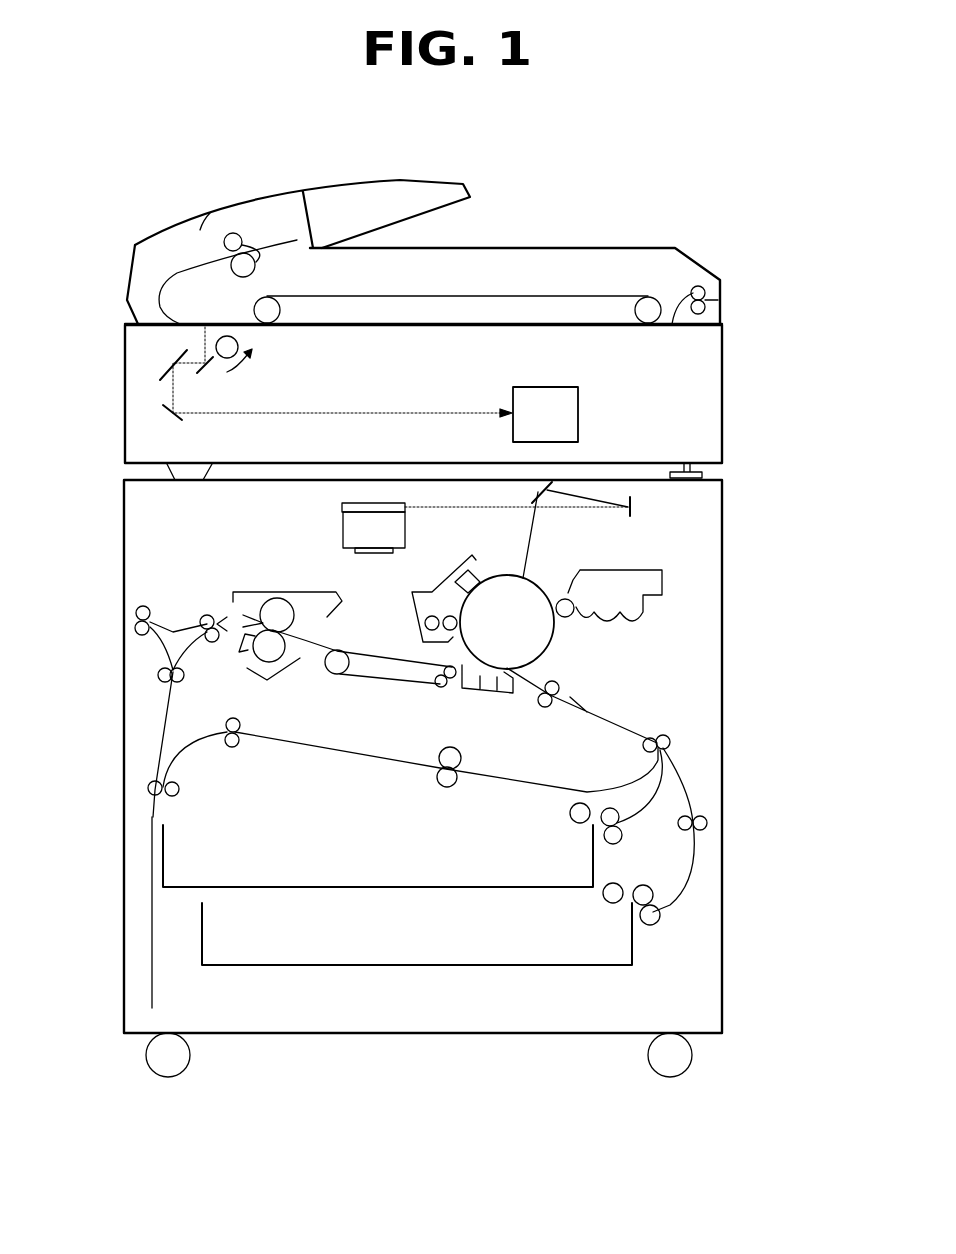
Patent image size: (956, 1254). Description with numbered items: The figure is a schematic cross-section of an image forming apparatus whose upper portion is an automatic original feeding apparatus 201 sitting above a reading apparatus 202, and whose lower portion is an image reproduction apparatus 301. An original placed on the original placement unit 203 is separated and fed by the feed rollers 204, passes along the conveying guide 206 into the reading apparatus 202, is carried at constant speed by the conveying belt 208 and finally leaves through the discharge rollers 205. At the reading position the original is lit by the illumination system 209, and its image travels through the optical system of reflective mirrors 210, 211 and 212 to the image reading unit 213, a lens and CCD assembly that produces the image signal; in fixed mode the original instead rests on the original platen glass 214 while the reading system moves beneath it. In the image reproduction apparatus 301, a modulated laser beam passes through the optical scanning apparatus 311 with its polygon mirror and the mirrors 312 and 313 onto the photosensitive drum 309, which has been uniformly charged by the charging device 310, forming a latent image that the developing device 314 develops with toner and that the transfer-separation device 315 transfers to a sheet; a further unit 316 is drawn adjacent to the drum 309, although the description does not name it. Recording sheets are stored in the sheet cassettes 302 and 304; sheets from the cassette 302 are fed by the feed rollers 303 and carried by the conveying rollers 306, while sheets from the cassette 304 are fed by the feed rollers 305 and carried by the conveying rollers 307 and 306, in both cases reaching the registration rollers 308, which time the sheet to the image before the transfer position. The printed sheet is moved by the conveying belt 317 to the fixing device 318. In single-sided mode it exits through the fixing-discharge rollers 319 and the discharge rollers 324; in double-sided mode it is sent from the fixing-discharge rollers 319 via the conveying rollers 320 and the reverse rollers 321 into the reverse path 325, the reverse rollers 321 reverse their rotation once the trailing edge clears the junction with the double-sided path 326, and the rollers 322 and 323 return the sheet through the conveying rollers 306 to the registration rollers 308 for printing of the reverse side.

The automatic original feeding apparatus 201 is at (677, 248).
The reading apparatus 202 is at (723, 392).
The original placement unit 203 is at (338, 183).
The feed rollers 204 is at (267, 228).
The discharge rollers 205 is at (722, 303).
The conveying guide 206 is at (177, 277).
The conveying belt 208 is at (427, 296).
The illumination system 209 is at (240, 343).
The reflective mirror 210 is at (203, 373).
The reflective mirror 211 is at (173, 363).
The reflective mirror 212 is at (173, 420).
The image reading unit 213 is at (578, 397).
The original platen glass 214 is at (518, 326).
The image reproduction apparatus 301 is at (723, 500).
The sheet cassette 302 is at (437, 887).
The feed rollers 303 is at (570, 813).
The sheet cassette 304 is at (437, 964).
The feed rollers 305 is at (632, 903).
The conveying rollers 306 is at (643, 742).
The conveying rollers 307 is at (707, 823).
The registration rollers 308 is at (559, 684).
The photosensitive drum 309 is at (563, 568).
The charging device 310 is at (477, 573).
The optical scanning apparatus 311 is at (342, 533).
The mirror 312 is at (631, 503).
The mirror 313 is at (528, 490).
The developing device 314 is at (648, 552).
The transfer-separation device 315 is at (470, 692).
The cleaner 316 is at (412, 603).
The conveying belt 317 is at (368, 677).
The fixing device 318 is at (263, 591).
The fixing-discharge rollers 319 is at (207, 615).
The conveying rollers 320 is at (184, 675).
The reverse rollers 321 is at (179, 790).
The rollers 322 is at (236, 747).
The rollers 323 is at (461, 758).
The discharge rollers 324 is at (140, 607).
The reverse path 325 is at (153, 817).
The double-sided path 326 is at (327, 750).